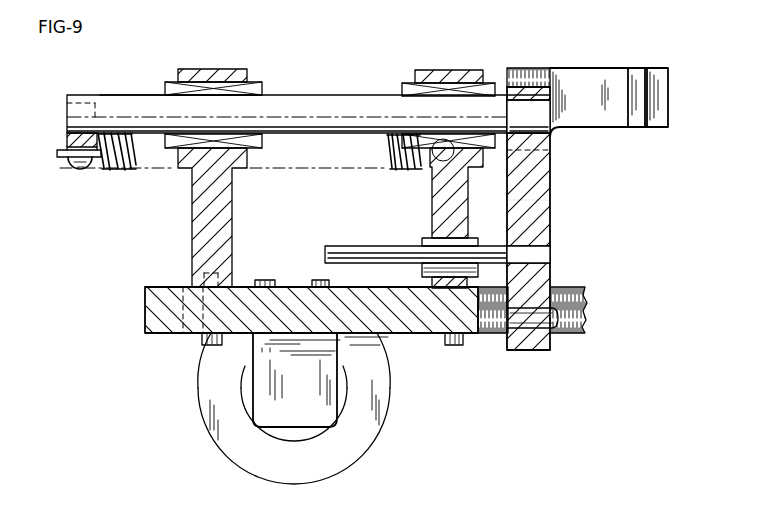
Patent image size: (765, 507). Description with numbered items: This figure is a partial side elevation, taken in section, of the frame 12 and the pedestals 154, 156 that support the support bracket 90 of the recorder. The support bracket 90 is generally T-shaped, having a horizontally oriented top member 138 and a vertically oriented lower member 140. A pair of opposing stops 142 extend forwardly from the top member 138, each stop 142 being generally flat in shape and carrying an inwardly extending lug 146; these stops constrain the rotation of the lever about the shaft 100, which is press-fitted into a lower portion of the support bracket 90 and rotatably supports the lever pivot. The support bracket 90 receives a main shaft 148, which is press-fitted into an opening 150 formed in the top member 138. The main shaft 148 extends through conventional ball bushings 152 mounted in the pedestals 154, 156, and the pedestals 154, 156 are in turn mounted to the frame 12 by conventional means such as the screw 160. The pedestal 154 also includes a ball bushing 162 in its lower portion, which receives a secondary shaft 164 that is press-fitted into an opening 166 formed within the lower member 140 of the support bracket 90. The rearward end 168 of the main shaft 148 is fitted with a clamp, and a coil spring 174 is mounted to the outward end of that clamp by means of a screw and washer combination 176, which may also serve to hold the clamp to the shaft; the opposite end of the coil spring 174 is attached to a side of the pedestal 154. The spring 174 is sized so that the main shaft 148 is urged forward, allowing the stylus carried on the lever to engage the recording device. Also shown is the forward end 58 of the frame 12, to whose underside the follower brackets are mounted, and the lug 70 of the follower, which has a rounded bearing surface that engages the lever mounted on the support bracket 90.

The frame 12 is at (240, 290).
The forward end 58 is at (450, 346).
The lug 70 is at (66, 145).
The support bracket 90 is at (551, 196).
The shaft 100 is at (508, 320).
The top member 138 is at (512, 72).
The lower member 140 is at (552, 156).
The stops 142 is at (578, 73).
The lug 146 is at (640, 68).
The main shaft 148 is at (312, 104).
The opening 150 is at (532, 104).
The ball bushings 152 is at (262, 88).
The pedestal 154 is at (430, 202).
The pedestal 156 is at (228, 214).
The screw 160 is at (200, 342).
The ball bushing 162 is at (475, 236).
The secondary shaft 164 is at (555, 251).
The opening 166 is at (548, 260).
The rearward end 168 is at (140, 64).
The coil spring 174 is at (127, 171).
The screw and washer combination 176 is at (90, 168).